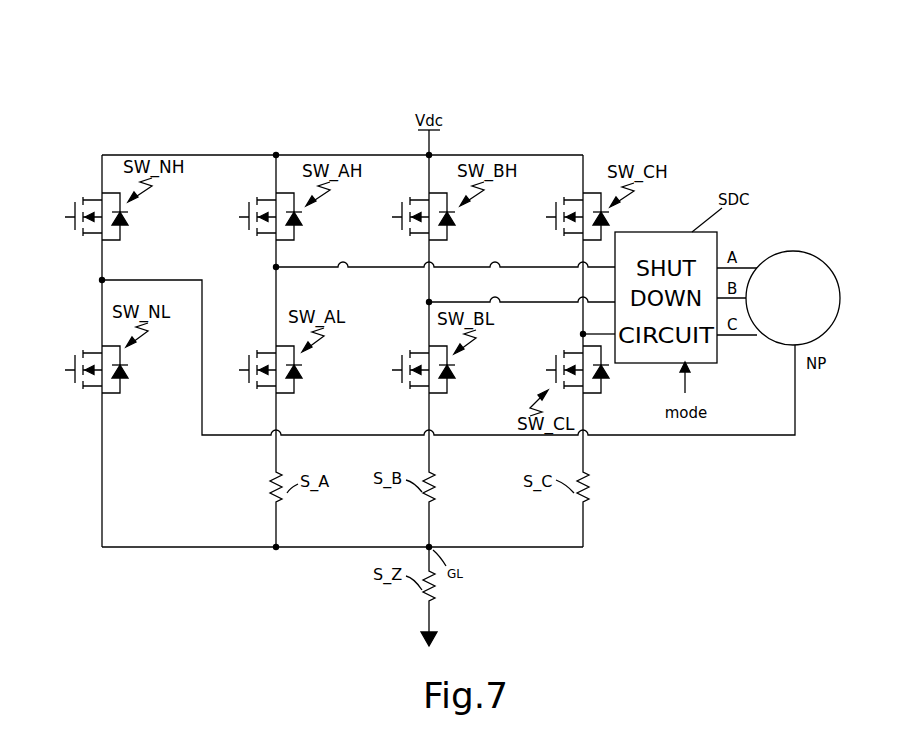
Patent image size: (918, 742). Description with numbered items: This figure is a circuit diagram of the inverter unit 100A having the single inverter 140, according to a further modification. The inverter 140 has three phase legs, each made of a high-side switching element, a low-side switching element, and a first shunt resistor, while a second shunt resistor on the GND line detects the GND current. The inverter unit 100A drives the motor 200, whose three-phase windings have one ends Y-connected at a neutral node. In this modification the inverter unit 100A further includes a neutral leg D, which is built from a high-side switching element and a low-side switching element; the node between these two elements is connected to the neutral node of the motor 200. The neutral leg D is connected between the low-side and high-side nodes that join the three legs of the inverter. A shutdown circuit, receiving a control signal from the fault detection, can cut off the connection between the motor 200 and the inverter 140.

The inverter unit 100A is at (590, 99).
The inverter 140 is at (346, 148).
The motor 200 is at (800, 252).
The neutral leg D is at (67, 313).